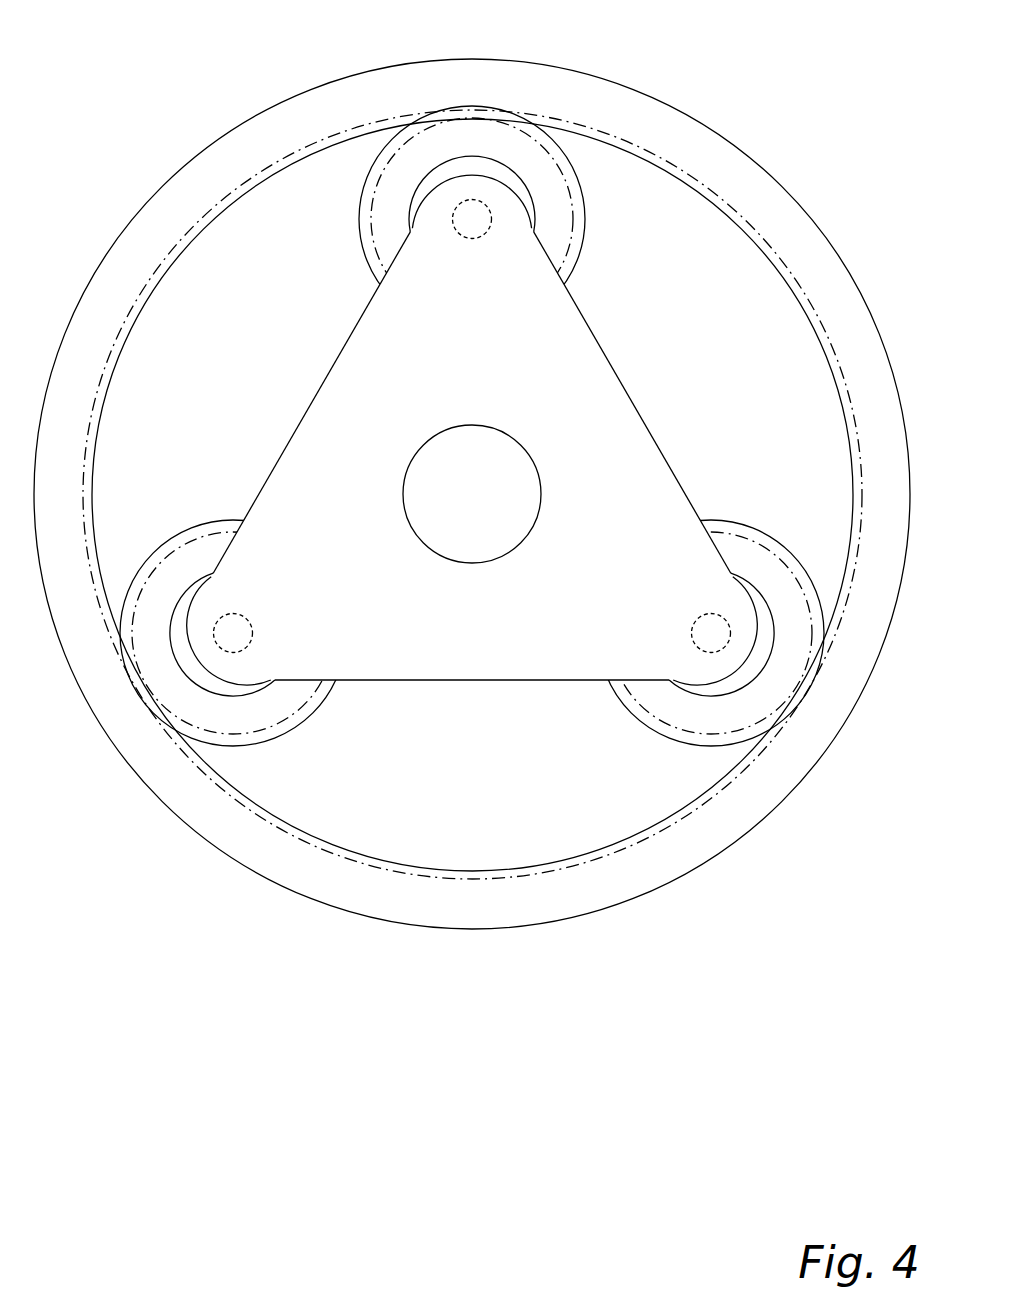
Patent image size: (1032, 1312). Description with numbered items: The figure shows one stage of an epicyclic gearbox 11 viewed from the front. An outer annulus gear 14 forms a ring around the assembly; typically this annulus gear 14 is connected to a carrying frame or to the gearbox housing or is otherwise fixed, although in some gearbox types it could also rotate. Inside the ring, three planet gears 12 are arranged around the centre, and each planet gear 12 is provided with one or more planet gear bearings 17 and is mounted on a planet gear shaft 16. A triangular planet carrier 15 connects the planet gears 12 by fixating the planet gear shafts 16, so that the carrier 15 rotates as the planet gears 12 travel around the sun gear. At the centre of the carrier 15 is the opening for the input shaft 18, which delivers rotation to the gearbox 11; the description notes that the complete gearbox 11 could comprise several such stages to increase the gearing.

The epicyclic gearbox 11 is at (410, 1023).
The planet gear 12 is at (537, 163).
The annulus gear 14 is at (737, 182).
The planet carrier 15 is at (396, 648).
The planet gear shaft 16 is at (468, 218).
The planet gear bearing 17 is at (462, 163).
The input shaft 18 is at (482, 513).